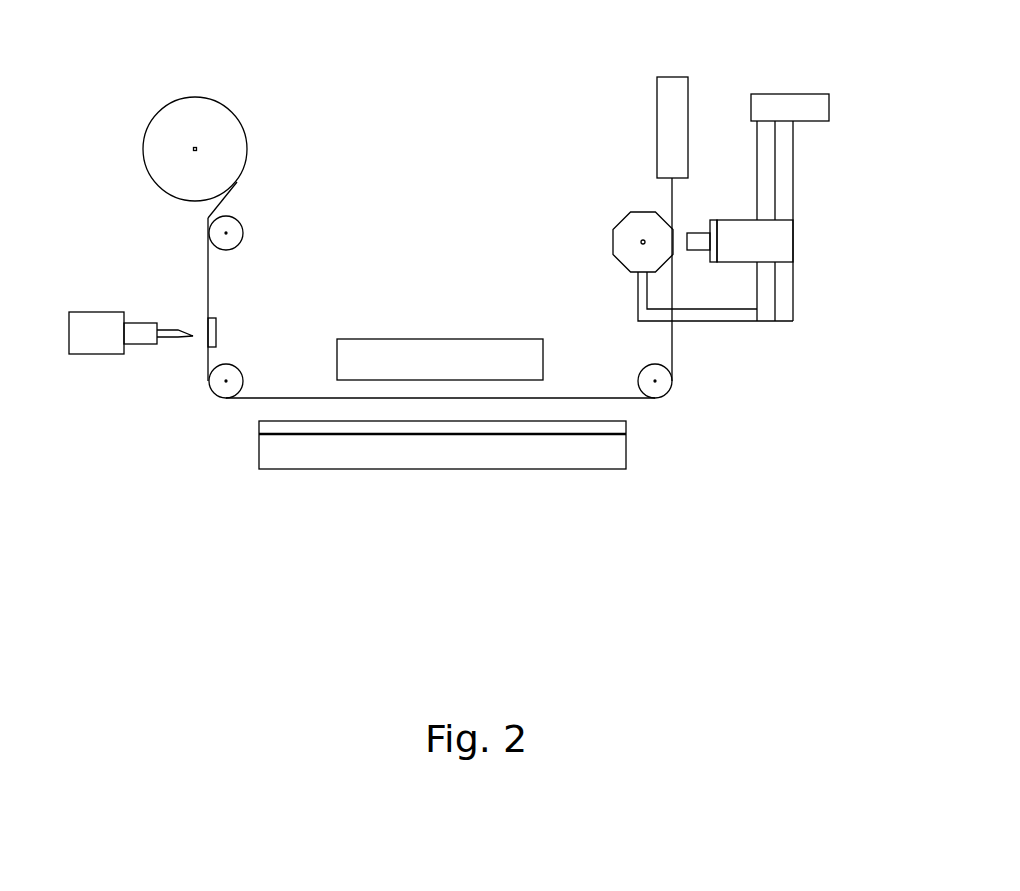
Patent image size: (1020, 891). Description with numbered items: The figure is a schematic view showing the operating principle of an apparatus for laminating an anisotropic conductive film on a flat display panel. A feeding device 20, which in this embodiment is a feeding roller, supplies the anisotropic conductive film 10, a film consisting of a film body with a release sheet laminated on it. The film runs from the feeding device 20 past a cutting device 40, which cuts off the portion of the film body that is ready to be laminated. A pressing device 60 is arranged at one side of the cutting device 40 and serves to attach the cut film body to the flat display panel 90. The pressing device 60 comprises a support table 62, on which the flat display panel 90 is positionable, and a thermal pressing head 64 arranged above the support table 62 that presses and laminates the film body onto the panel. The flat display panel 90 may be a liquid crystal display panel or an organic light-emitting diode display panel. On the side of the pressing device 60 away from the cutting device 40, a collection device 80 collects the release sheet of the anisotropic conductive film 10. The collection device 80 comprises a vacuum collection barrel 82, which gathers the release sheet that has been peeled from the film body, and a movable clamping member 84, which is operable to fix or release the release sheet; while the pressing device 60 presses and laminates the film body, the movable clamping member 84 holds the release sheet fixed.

The anisotropic conductive film 10 is at (207, 275).
The feeding device 20 is at (200, 125).
The cutting device 40 is at (97, 311).
The pressing device 60 is at (467, 486).
The support table 62 is at (367, 454).
The thermal pressing head 64 is at (435, 355).
The collection device 80 is at (698, 241).
The vacuum collection barrel 82 is at (667, 147).
The movable clamping member 84 is at (783, 241).
The flat display panel 90 is at (462, 427).